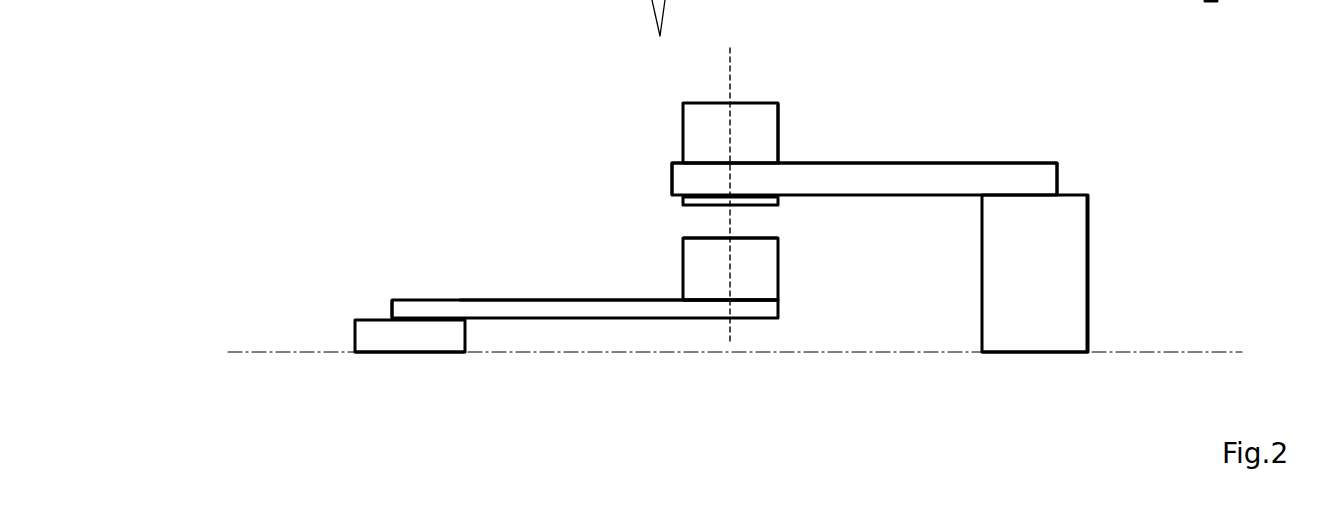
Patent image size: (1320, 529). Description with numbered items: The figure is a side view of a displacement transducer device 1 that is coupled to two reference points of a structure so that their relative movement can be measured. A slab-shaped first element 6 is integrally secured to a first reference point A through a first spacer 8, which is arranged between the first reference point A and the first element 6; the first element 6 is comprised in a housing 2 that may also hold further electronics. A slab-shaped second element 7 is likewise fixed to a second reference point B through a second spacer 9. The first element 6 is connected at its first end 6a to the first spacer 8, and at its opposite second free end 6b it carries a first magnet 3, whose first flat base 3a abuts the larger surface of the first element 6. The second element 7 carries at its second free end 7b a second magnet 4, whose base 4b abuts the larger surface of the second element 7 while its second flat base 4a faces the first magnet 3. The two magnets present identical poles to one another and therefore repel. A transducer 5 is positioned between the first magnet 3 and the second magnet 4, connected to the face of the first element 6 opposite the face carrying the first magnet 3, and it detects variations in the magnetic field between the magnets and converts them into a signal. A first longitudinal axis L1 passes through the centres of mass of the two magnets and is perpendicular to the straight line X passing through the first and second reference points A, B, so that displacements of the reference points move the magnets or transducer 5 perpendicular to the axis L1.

The displacement transducer device 1 is at (936, 125).
The housing 2 is at (1093, 268).
The first magnet 3 is at (682, 120).
The first flat base 3a is at (783, 162).
The second magnet 4 is at (682, 273).
The second flat base 4a is at (755, 240).
The base opposite the second base 4b is at (755, 301).
The transducer 5 is at (683, 202).
The first element 6 is at (950, 156).
The first end of first element 6a is at (1022, 185).
The second free end of first element 6b is at (670, 175).
The second element 7 is at (414, 294).
The second free end of second element 7b is at (460, 298).
The first spacer 8 is at (1065, 327).
The second spacer 9 is at (373, 335).
The first longitudinal axis L1 is at (732, 83).
The straight line X is at (257, 355).
The first reference point A is at (1038, 353).
The second reference point B is at (410, 353).